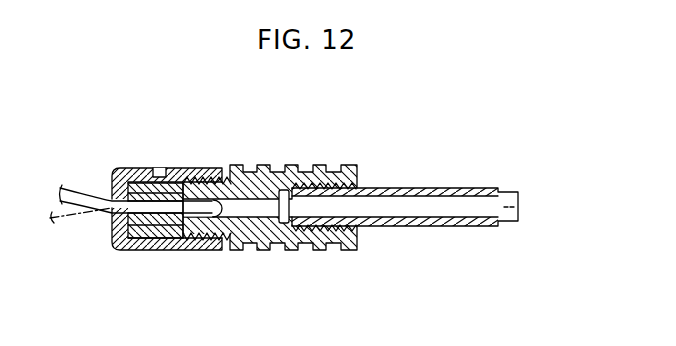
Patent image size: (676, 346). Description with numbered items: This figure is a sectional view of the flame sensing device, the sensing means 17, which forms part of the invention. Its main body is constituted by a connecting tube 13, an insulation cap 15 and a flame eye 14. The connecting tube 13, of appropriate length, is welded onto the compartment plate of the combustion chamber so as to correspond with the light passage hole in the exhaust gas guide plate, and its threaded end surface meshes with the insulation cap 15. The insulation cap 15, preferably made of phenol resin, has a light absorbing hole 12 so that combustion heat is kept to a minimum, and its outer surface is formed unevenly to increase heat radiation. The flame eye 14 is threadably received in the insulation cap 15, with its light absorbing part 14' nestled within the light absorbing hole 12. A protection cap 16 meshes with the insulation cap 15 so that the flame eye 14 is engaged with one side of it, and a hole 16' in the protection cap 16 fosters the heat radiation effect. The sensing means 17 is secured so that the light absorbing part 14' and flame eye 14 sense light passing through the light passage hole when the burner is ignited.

The light absorbing hole 12 is at (518, 204).
The connecting tube 13 is at (463, 188).
The flame eye 14 is at (150, 251).
The light absorbing part 14' is at (232, 250).
The insulation cap 15 is at (318, 243).
The protection cap 16 is at (148, 171).
The hole 16' is at (194, 131).
The sensing means 17 is at (359, 181).